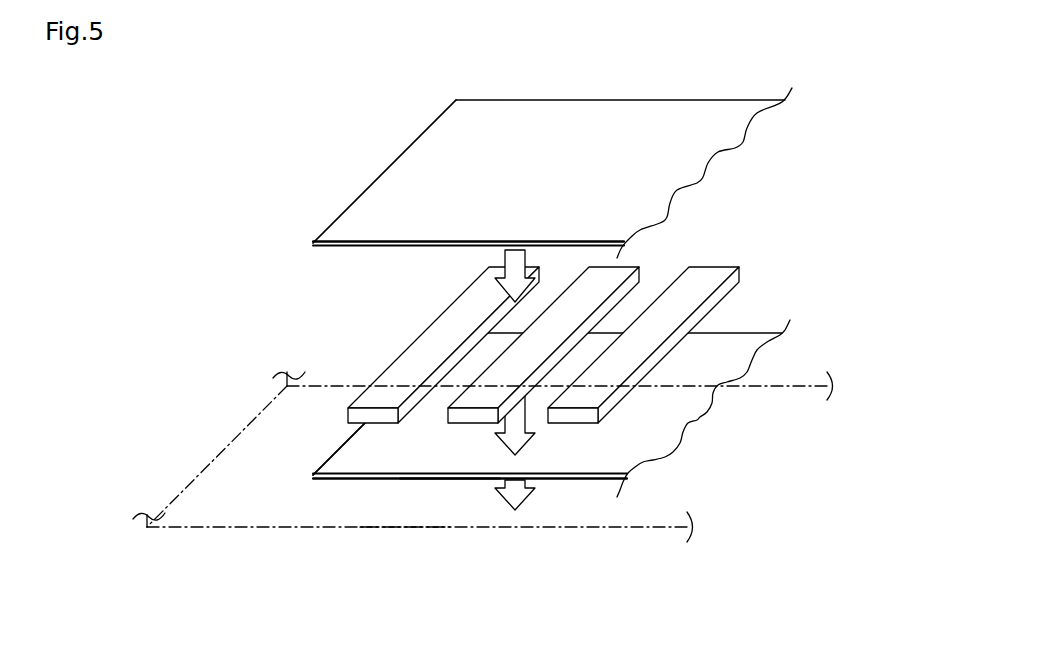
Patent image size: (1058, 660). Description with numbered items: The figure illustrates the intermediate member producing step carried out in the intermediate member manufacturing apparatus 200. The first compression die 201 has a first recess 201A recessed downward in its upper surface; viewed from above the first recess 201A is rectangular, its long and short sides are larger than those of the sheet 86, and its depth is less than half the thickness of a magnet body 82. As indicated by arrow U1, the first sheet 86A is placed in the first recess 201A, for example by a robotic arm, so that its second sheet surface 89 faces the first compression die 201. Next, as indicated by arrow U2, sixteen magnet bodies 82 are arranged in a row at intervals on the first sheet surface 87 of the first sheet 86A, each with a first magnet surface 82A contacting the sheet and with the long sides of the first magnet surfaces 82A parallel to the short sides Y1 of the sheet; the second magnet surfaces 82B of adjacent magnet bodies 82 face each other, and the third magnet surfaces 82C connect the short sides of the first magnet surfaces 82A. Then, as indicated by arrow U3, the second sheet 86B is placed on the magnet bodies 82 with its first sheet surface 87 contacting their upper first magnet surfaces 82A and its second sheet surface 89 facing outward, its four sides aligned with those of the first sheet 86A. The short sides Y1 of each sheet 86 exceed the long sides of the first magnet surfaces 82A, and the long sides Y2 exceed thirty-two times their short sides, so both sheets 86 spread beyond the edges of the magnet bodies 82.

The sheet 86 is at (600, 273).
The first sheet 86A is at (727, 367).
The second sheet 86B is at (667, 115).
The first sheet surface 87 is at (338, 248).
The second sheet surface 89 is at (403, 165).
The magnet body 82 is at (579, 365).
The first magnet surface 82A is at (710, 266).
The second magnet surface 82B is at (637, 377).
The third magnet surface 82C is at (575, 415).
The arrow U1 is at (497, 512).
The arrow U2 is at (500, 440).
The arrow U3 is at (502, 257).
The short sides of the sheet Y1 is at (343, 446).
The long sides of the sheet Y2 is at (448, 478).
The intermediate member manufacturing apparatus 200 is at (480, 500).
The first compression die 201 is at (300, 527).
The first recess 201A is at (397, 527).